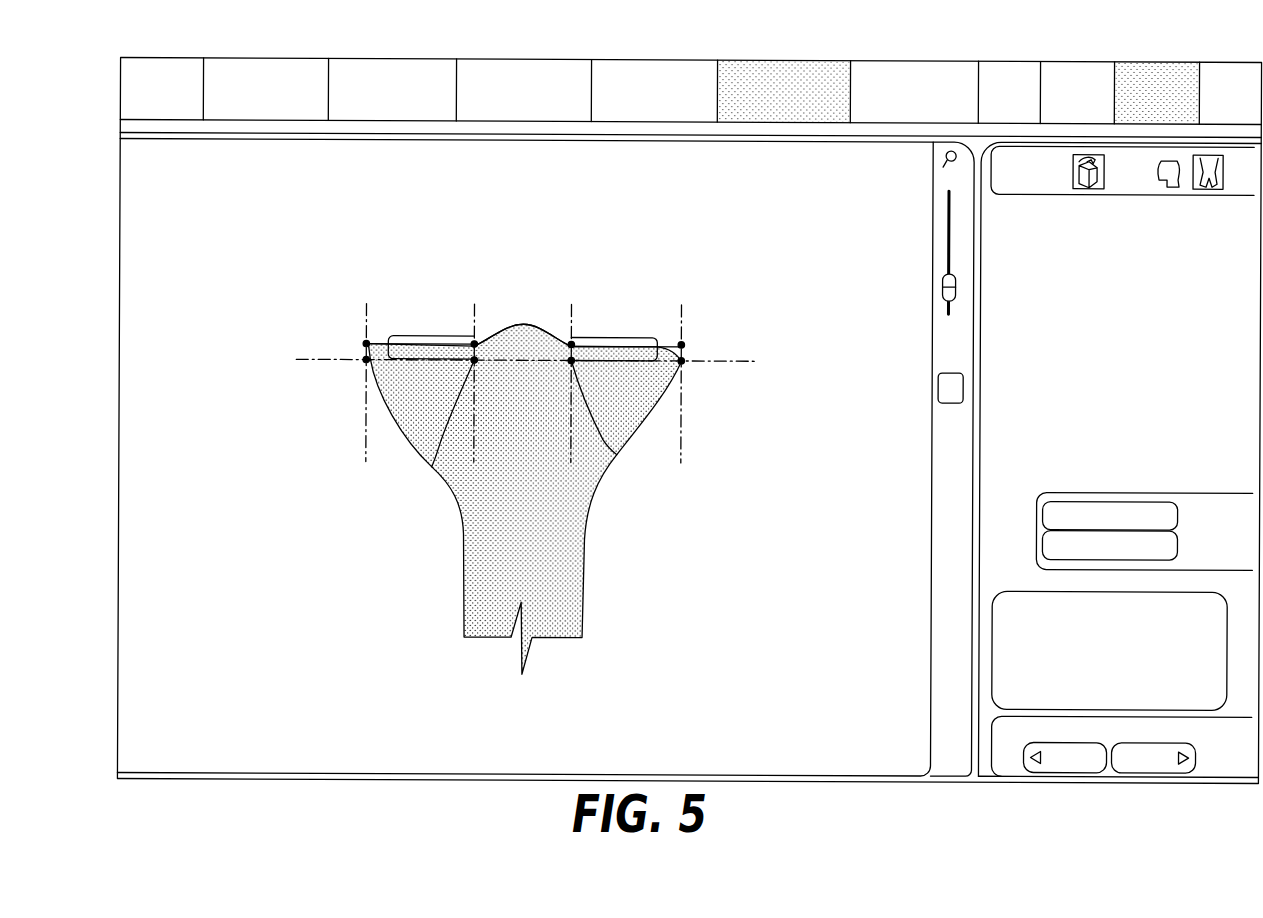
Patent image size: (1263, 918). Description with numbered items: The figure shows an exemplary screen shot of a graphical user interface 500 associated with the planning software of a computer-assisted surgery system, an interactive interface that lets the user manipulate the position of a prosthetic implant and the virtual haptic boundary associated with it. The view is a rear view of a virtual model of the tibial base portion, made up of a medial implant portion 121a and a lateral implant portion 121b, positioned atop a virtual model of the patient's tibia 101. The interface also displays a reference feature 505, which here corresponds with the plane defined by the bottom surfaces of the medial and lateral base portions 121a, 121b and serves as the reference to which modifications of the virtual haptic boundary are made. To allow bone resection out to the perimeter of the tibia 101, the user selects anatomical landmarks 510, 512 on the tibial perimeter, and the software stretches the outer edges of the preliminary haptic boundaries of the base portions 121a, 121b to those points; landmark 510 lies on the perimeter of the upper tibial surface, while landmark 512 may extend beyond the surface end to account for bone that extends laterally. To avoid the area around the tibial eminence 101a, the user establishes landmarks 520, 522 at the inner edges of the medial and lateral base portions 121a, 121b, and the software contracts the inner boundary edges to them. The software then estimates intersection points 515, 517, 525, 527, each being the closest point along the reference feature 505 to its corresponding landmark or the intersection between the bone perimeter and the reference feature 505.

The graphical user interface 500 is at (168, 46).
The tibia 101 is at (460, 510).
The tibial eminence 101a is at (495, 333).
The medial implant portion 121a is at (400, 336).
The lateral implant portion 121b is at (586, 338).
The reference feature 505 is at (735, 361).
The anatomical landmark 510 is at (366, 345).
The anatomical landmark 512 is at (679, 345).
The intersection point 515 is at (366, 361).
The intersection point 517 is at (684, 365).
The anatomical landmark 520 is at (472, 345).
The anatomical landmark 522 is at (569, 345).
The intersection point 525 is at (432, 462).
The intersection point 527 is at (608, 467).